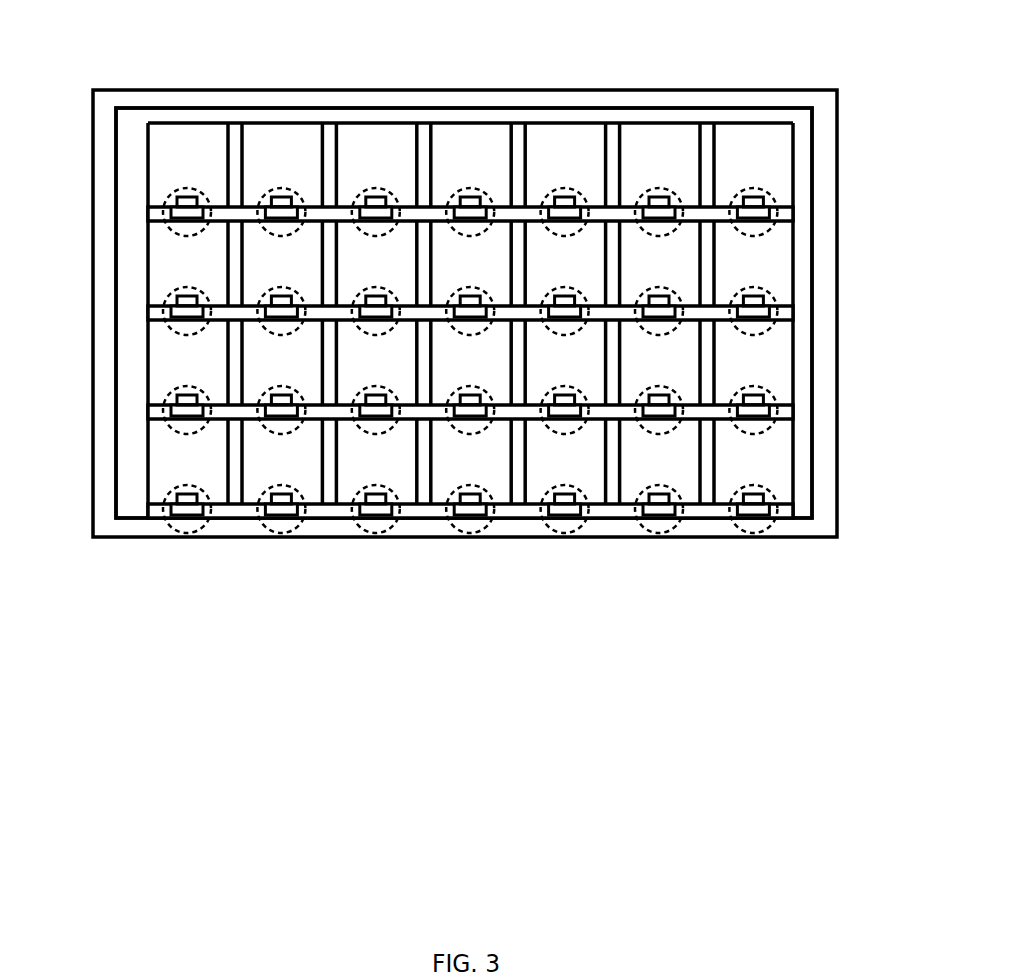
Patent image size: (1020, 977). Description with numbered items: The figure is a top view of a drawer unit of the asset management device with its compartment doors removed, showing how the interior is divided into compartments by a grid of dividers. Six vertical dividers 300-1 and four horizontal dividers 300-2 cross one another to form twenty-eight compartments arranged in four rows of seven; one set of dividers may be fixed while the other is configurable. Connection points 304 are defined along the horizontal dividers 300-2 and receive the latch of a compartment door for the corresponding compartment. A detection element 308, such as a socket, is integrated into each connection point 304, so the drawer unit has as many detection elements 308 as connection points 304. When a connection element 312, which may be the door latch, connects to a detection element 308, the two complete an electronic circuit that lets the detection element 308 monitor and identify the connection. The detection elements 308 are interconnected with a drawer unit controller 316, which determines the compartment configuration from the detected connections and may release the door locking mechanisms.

The vertical dividers 300-1 is at (716, 168).
The horizontal dividers 300-2 is at (780, 519).
The drawer unit controller 316 is at (133, 108).
The detection element 308 is at (170, 217).
The connection element 312 is at (170, 206).
The connection points 304 is at (187, 188).